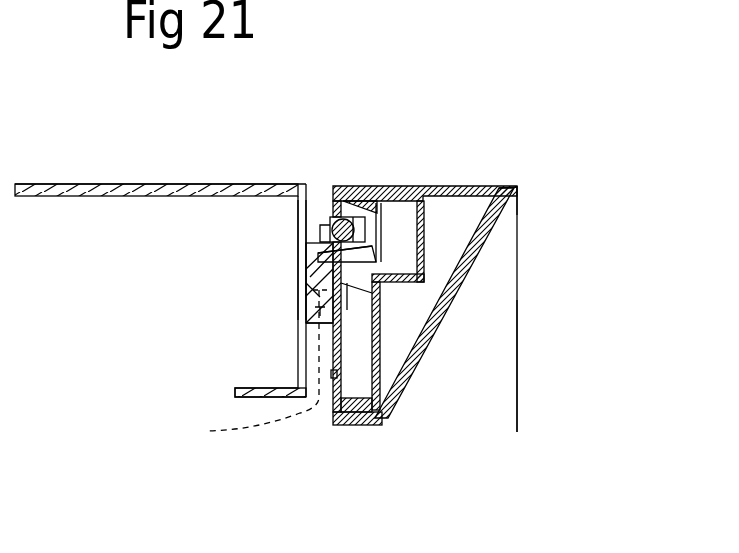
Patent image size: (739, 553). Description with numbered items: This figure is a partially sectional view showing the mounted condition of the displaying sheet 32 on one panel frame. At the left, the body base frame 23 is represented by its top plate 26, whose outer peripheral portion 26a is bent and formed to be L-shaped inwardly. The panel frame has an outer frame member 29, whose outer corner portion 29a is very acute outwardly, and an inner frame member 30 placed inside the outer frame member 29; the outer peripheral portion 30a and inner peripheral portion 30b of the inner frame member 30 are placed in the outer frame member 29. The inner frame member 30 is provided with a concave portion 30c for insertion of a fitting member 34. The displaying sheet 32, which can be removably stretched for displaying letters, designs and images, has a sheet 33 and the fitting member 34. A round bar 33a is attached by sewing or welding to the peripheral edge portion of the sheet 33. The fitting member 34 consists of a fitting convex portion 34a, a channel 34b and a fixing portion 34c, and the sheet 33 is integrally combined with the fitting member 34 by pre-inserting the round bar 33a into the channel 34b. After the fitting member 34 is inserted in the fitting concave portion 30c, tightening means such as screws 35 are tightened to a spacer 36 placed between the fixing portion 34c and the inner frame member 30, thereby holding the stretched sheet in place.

The body base frame 23 is at (241, 177).
The top plate 26 is at (97, 182).
The outer peripheral portion 26a is at (308, 243).
The outer frame member 29 is at (444, 318).
The outer corner portion 29a is at (519, 203).
The inner frame member 30 is at (426, 242).
The outer peripheral portion 30a is at (401, 200).
The inner peripheral portion 30b is at (354, 428).
The concave portion 30c is at (393, 255).
The displaying sheet 32 is at (527, 273).
The sheet 33 is at (518, 394).
The round bar 33a is at (307, 258).
The fitting member 34 is at (317, 222).
The fitting convex portion 34a is at (302, 270).
The channel 34b is at (305, 235).
The fixing portion 34c is at (305, 304).
The screws 35 is at (239, 369).
The spacer 36 is at (337, 377).